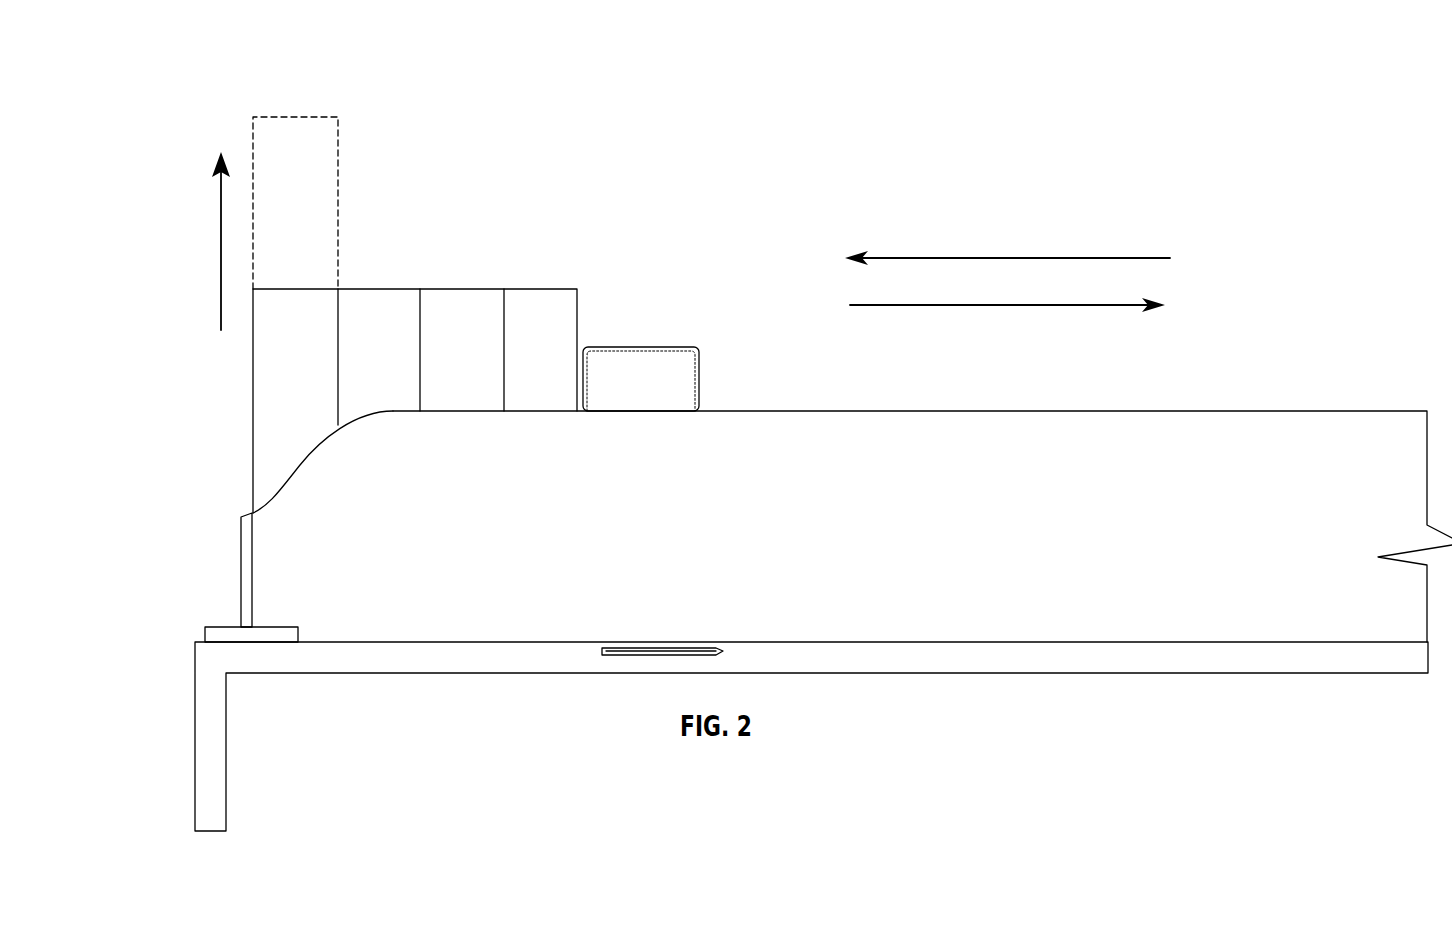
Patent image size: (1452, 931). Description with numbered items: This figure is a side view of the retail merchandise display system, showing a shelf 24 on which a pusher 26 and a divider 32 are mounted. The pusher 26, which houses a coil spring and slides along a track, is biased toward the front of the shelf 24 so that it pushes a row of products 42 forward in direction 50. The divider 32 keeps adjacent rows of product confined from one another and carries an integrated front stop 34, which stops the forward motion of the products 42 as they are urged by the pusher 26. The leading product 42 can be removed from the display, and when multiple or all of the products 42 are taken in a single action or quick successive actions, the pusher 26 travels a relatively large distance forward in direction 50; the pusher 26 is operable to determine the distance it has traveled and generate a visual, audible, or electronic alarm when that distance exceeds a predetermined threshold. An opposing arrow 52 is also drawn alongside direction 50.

The shelf 24 is at (195, 744).
The pusher 26 is at (683, 372).
The divider 32 is at (1312, 448).
The front stop 34 is at (241, 557).
The products 42 is at (299, 117).
The direction 50 is at (982, 258).
The second direction arrow 52 is at (1043, 305).